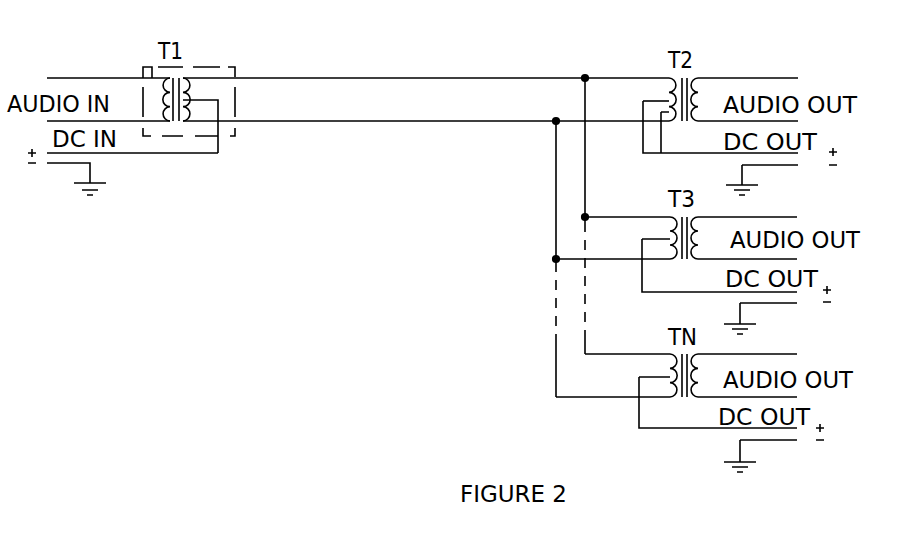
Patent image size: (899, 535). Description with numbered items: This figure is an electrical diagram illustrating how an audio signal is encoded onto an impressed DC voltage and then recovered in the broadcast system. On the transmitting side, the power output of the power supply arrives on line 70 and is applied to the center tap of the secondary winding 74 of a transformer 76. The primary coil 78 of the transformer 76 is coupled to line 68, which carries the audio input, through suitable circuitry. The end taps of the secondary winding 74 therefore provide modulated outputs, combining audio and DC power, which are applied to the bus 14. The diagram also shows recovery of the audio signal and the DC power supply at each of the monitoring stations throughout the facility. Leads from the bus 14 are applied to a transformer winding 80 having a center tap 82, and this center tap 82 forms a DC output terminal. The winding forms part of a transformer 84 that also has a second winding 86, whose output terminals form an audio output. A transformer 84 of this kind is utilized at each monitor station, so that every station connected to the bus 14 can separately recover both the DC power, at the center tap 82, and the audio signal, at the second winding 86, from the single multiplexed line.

The bus 14 is at (444, 121).
The line 68 is at (73, 78).
The line 70 is at (138, 153).
The secondary winding 74 is at (191, 76).
The transformer 76 is at (207, 136).
The primary coil 78 is at (152, 67).
The transformer winding 80 is at (661, 153).
The center tap 82 is at (657, 101).
The transformer 84 is at (696, 75).
The second winding 86 is at (773, 78).